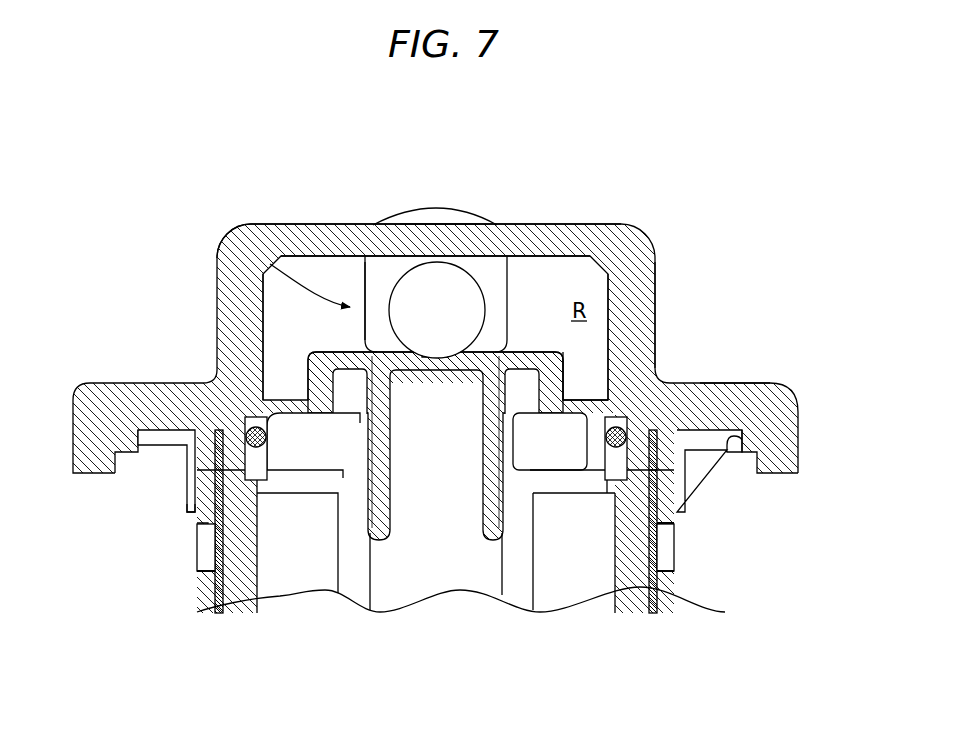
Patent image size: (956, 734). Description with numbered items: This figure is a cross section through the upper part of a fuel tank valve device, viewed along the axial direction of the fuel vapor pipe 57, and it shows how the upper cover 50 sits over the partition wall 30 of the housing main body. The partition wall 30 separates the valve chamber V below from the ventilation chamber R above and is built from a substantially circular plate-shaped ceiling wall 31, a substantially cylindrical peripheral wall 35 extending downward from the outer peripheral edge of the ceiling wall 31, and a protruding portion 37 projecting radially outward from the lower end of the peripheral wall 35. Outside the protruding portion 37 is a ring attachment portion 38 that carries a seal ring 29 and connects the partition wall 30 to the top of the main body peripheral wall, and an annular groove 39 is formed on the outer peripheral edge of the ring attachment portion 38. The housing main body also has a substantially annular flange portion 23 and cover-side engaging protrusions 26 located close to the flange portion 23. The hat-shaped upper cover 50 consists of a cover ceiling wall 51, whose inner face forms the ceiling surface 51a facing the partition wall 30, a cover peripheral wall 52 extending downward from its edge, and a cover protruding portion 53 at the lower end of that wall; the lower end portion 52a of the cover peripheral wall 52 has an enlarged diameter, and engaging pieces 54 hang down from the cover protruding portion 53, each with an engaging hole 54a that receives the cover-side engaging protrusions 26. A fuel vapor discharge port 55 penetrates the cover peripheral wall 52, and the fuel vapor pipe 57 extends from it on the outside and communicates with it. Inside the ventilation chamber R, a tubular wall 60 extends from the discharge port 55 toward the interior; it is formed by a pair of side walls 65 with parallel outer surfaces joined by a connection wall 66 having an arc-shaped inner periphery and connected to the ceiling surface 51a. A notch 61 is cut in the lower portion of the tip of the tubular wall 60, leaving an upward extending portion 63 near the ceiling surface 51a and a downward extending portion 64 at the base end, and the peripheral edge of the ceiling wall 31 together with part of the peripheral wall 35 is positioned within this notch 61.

The flange portion 23 is at (738, 441).
The cover-side engaging protrusions 26 is at (208, 556).
The seal ring 29 is at (616, 495).
The partition wall 30 is at (654, 257).
The ceiling wall 31 is at (524, 270).
The peripheral wall 35 is at (590, 395).
The protruding portion 37 is at (293, 400).
The ring attachment portion 38 is at (602, 478).
The annular groove 39 is at (622, 505).
The upper cover 50 is at (541, 342).
The cover ceiling wall 51 is at (280, 222).
The ceiling surface 51a is at (340, 255).
The cover peripheral wall 52 is at (570, 352).
The lower end portion 52a is at (662, 478).
The cover protruding portion 53 is at (722, 395).
The engaging pieces 54 is at (212, 577).
The engaging hole 54a is at (210, 527).
The fuel vapor discharge port 55 is at (450, 329).
The fuel vapor pipe 57 is at (456, 209).
The tubular wall 60 is at (592, 220).
The notch 61 is at (481, 360).
The upward extending portion 63 is at (233, 221).
The downward extending portion 64 is at (362, 350).
The side walls 65 is at (363, 258).
The connection wall 66 is at (420, 256).